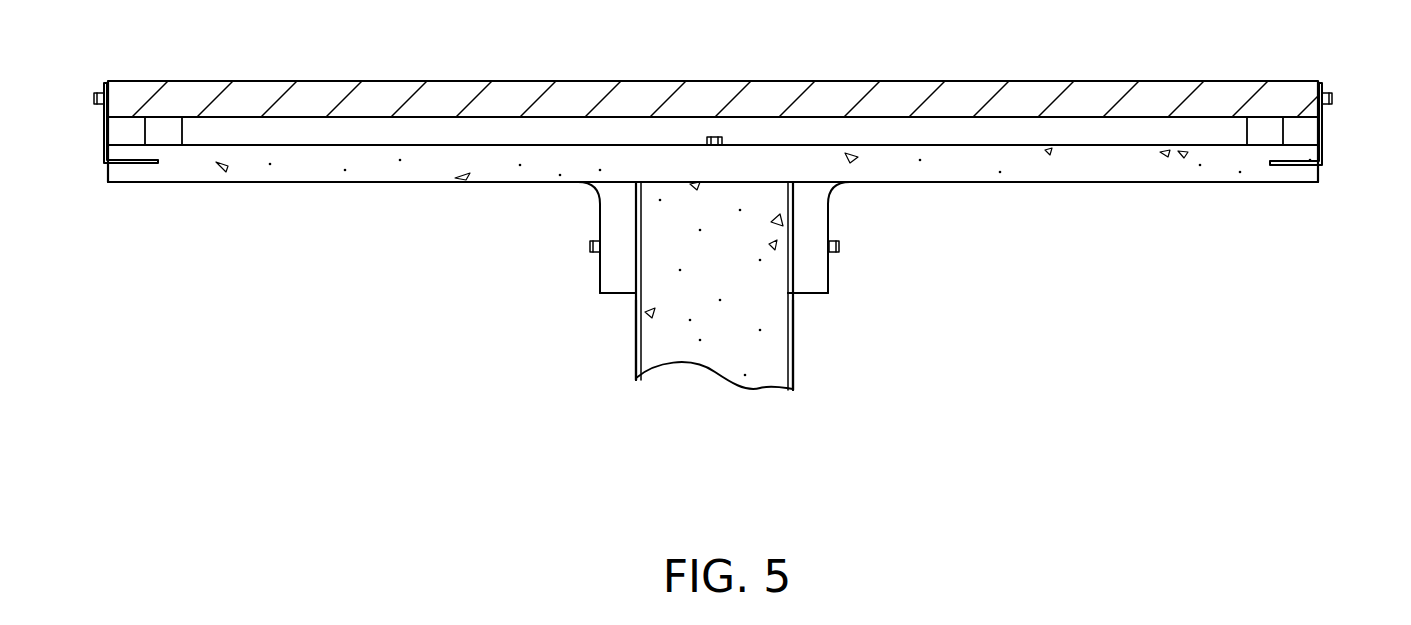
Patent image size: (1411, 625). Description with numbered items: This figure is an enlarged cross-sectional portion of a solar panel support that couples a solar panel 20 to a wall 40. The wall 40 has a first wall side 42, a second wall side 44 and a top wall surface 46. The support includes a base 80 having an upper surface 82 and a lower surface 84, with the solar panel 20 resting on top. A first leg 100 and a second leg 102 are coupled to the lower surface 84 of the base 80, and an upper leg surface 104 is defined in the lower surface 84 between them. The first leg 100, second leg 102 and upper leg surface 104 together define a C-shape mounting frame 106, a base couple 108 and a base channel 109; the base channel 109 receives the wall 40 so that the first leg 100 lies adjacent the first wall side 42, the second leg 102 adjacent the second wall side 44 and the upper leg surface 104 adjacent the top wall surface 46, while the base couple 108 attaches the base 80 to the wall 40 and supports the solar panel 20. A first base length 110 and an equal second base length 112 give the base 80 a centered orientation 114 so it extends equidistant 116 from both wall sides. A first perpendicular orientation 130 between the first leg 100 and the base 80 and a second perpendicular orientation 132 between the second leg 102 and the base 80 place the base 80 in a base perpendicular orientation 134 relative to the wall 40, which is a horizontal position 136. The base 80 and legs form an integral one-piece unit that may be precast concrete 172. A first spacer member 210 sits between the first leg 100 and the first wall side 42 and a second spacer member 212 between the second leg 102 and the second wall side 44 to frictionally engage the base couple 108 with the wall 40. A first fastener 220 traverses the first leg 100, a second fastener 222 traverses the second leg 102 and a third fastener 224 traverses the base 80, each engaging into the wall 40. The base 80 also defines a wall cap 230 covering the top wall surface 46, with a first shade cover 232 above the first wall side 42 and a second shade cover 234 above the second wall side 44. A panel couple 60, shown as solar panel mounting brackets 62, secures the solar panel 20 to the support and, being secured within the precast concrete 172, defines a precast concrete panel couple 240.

The solar panel 20 is at (293, 81).
The wall 40 is at (722, 368).
The first wall side 42 is at (636, 376).
The second wall side 44 is at (788, 385).
The top wall surface 46 is at (677, 182).
The panel couple 60 is at (972, 183).
The solar panel mounting brackets 62 is at (104, 124).
The base 80 is at (380, 183).
The upper surface 82 is at (453, 145).
The lower surface 84 is at (302, 183).
The first leg 100 is at (600, 275).
The second leg 102 is at (830, 280).
The upper leg surface 104 is at (757, 182).
The C-shape mounting frame 106 is at (795, 297).
The base couple 108 is at (815, 297).
The base channel 109 is at (636, 213).
The first base length 110 is at (205, 183).
The second base length 112 is at (1057, 183).
The centered orientation 114 is at (163, 183).
The equidistant 116 is at (126, 183).
The first perpendicular orientation 130 is at (605, 295).
The second perpendicular orientation 132 is at (830, 218).
The base perpendicular orientation 134 is at (805, 297).
The horizontal position 136 is at (1310, 183).
The precast concrete 172 is at (1113, 150).
The first spacer member 210 is at (648, 318).
The second spacer member 212 is at (793, 325).
The first fastener 220 is at (590, 247).
The second fastener 222 is at (839, 250).
The third fastener 224 is at (715, 137).
The wall cap 230 is at (1222, 142).
The first shade cover 232 is at (243, 183).
The second shade cover 234 is at (1112, 183).
The precast concrete panel couple 240 is at (98, 108).